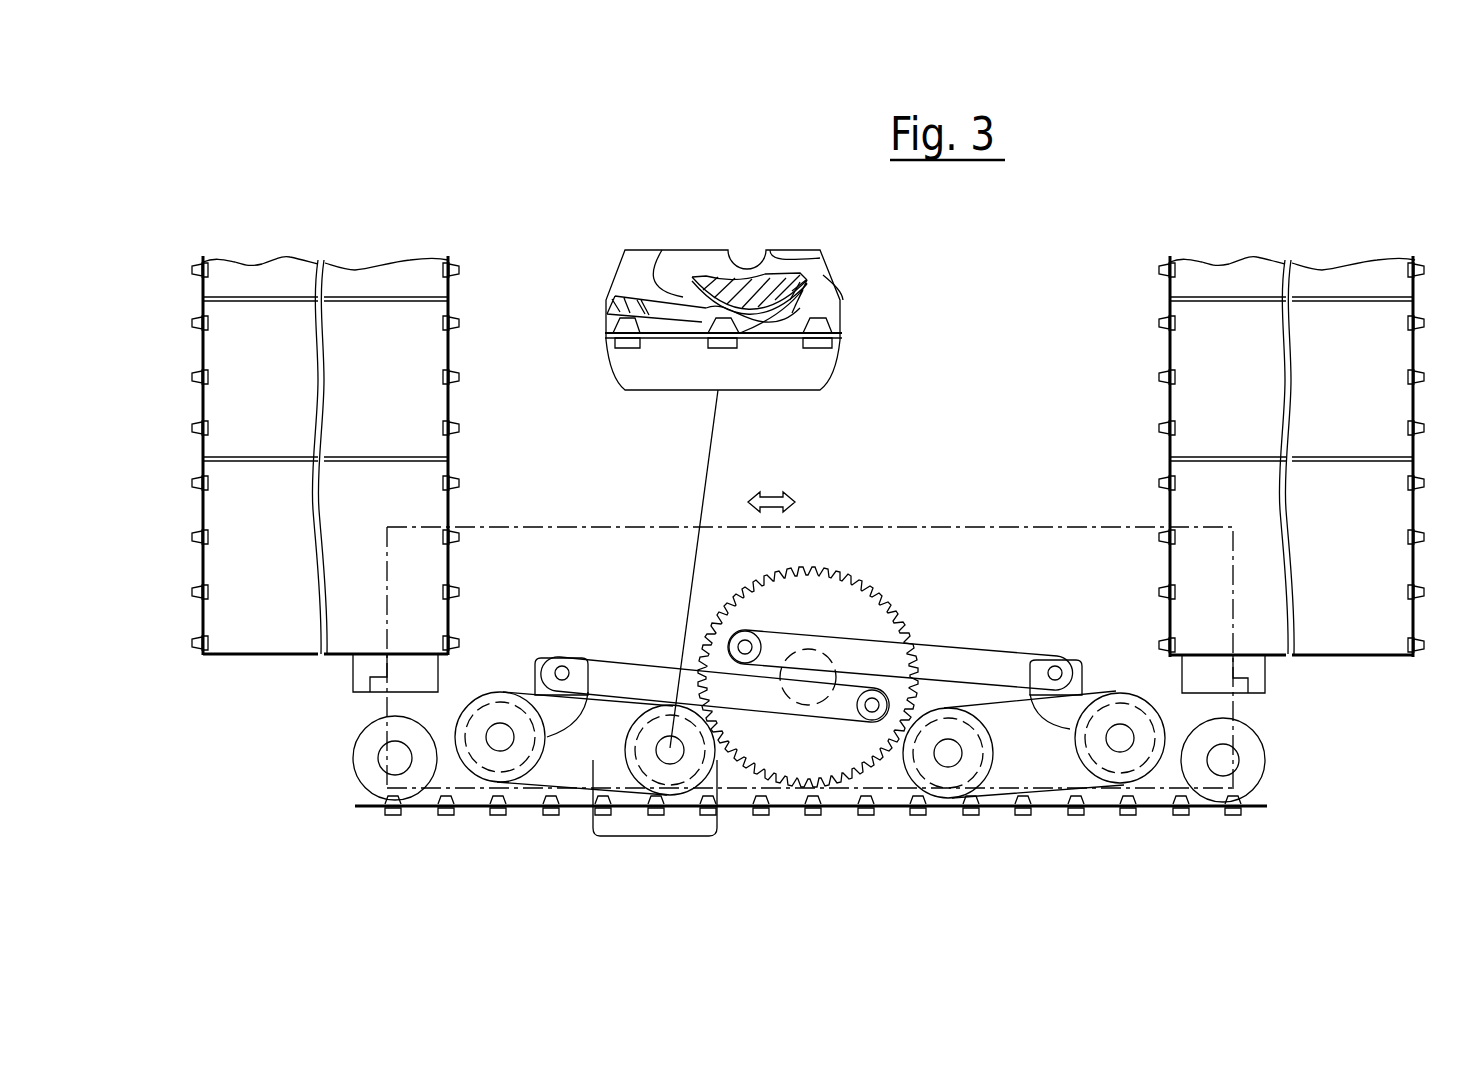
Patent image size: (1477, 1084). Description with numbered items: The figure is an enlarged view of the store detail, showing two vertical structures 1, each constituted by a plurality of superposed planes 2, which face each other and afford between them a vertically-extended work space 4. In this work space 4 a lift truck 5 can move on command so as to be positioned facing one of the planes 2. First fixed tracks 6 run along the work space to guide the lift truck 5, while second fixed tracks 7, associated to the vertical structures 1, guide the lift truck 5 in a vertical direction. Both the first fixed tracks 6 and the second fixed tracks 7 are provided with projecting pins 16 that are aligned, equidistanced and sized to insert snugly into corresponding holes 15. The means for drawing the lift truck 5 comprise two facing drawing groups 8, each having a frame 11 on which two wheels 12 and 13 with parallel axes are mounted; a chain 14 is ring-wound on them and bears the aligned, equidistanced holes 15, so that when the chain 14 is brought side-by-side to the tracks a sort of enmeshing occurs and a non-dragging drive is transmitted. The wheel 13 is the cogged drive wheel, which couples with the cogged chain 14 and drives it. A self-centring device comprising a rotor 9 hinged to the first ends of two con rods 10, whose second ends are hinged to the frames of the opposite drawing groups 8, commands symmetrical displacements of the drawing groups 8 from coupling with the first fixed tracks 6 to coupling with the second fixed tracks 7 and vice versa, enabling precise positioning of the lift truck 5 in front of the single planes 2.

The vertical structure 1 is at (168, 228).
The plane 2 is at (398, 295).
The work space 4 is at (991, 337).
The lift truck 5 is at (893, 490).
The first fixed tracks 6 is at (420, 808).
The second fixed tracks 7 is at (200, 405).
The drawing group 8 is at (516, 648).
The rotor 9 is at (810, 613).
The con rod 10 is at (622, 675).
The frame 11 is at (583, 738).
The wheel 12 is at (607, 790).
The drive wheel 13 is at (568, 670).
The chain 14 is at (580, 787).
The hole 15 is at (620, 300).
The projecting pin 16 is at (194, 537).